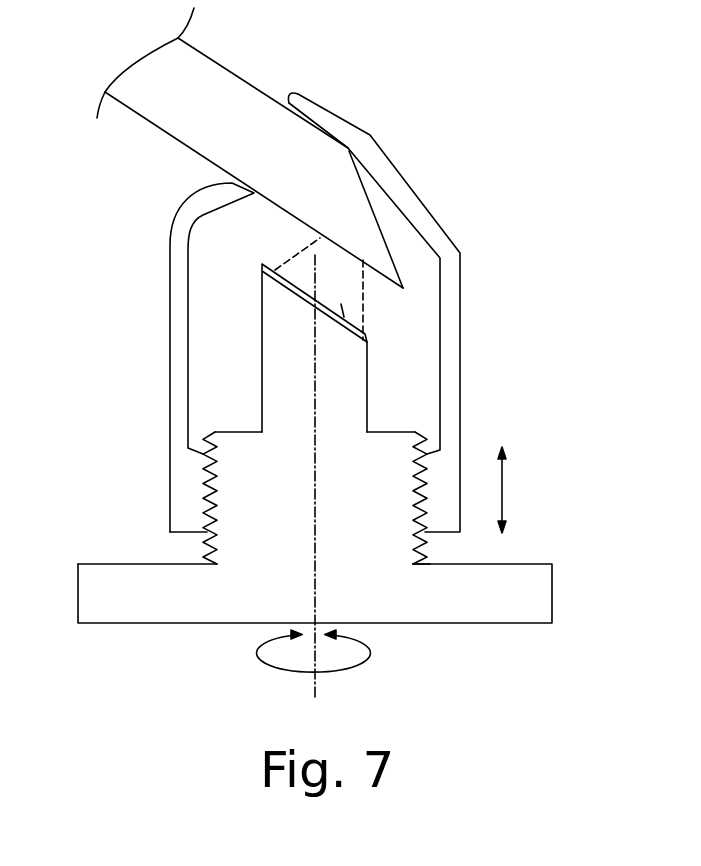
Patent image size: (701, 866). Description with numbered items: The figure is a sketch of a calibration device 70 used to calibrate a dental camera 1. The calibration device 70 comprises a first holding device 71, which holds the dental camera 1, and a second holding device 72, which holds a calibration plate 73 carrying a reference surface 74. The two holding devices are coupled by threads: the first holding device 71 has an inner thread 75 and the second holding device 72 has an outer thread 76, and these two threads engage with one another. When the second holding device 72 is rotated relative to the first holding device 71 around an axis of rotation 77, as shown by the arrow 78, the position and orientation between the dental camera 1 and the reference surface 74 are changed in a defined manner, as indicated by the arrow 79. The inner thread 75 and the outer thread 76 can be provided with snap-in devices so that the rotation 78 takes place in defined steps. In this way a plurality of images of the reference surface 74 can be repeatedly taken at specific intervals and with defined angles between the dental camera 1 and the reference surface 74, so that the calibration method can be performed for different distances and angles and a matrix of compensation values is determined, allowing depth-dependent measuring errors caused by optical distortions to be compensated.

The dental camera 1 is at (225, 88).
The calibration device 70 is at (485, 377).
The first holding device 71 is at (427, 208).
The second holding device 72 is at (528, 584).
The calibration plate 73 is at (330, 321).
The reference surface 74 is at (342, 311).
The inner thread 75 is at (424, 485).
The outer thread 76 is at (414, 546).
The axis of rotation 77 is at (316, 680).
The arrow 78 is at (371, 653).
The arrow 79 is at (503, 490).